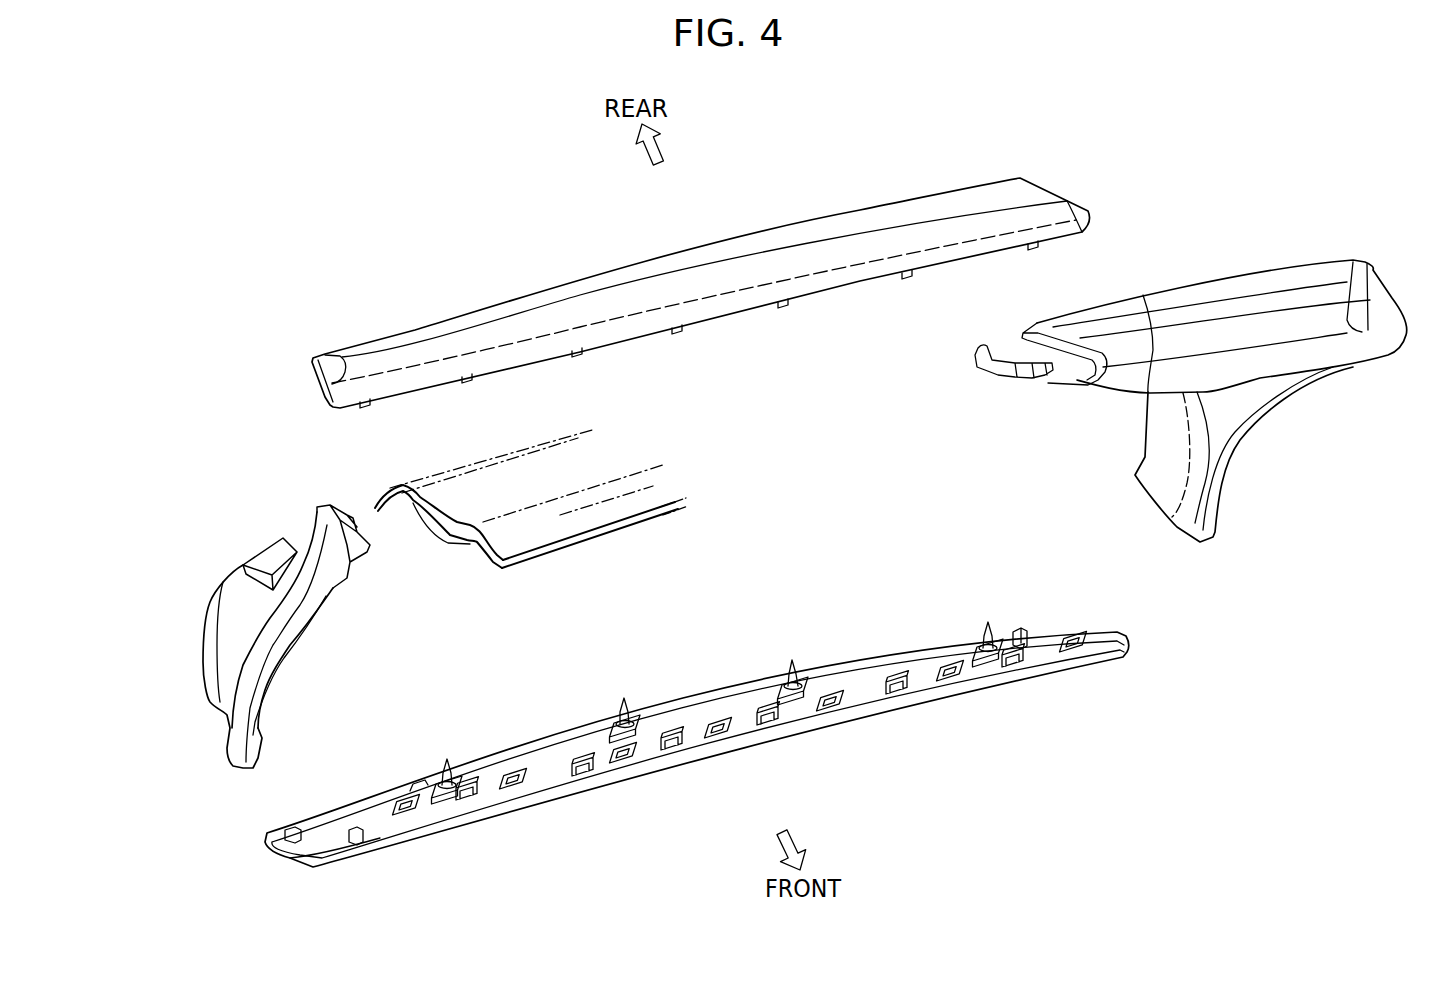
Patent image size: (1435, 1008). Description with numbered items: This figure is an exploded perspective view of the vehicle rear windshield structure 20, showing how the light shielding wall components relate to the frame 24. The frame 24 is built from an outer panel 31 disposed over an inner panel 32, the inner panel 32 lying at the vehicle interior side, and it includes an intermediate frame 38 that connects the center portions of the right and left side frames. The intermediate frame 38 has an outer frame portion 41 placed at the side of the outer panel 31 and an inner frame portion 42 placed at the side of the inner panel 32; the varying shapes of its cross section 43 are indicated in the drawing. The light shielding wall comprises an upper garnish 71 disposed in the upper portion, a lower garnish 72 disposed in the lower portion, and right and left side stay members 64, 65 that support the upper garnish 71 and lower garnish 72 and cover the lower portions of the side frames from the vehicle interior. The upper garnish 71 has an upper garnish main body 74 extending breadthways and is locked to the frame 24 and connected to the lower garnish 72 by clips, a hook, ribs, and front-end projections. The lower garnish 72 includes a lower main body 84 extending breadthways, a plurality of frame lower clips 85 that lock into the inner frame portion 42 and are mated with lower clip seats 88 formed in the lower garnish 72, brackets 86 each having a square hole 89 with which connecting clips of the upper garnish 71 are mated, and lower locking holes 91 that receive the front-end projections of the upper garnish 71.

The vehicle rear windshield structure 20 is at (212, 154).
The frame 24 is at (549, 566).
The outer panel 31 is at (512, 534).
The inner panel 32 is at (637, 562).
The intermediate frame 38 is at (526, 536).
The outer frame portion 41 is at (543, 533).
The inner frame portion 42 is at (602, 543).
The cross section 43 is at (446, 527).
The right side stay member 64 is at (1237, 290).
The left side stay member 65 is at (230, 578).
The upper garnish 71 is at (701, 259).
The lower garnish 72 is at (697, 741).
The upper garnish main body 74 is at (738, 245).
The lower main body 84 is at (750, 702).
The frame lower clip 85 is at (446, 760).
The bracket 86 is at (409, 824).
The lower clip seat 88 is at (417, 776).
The square hole 89 is at (412, 803).
The lower locking hole 91 is at (465, 798).